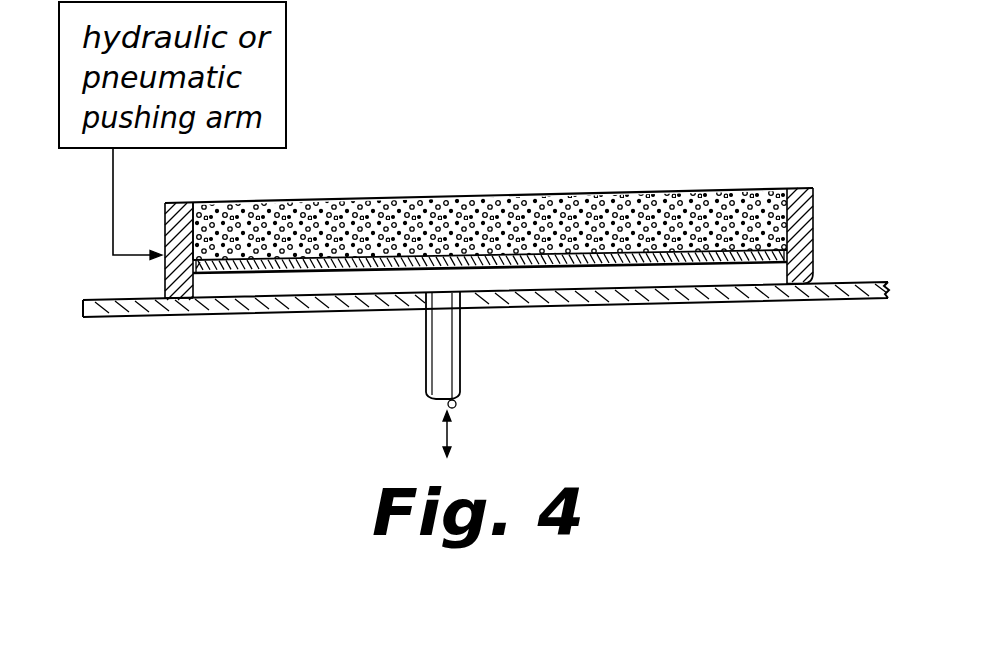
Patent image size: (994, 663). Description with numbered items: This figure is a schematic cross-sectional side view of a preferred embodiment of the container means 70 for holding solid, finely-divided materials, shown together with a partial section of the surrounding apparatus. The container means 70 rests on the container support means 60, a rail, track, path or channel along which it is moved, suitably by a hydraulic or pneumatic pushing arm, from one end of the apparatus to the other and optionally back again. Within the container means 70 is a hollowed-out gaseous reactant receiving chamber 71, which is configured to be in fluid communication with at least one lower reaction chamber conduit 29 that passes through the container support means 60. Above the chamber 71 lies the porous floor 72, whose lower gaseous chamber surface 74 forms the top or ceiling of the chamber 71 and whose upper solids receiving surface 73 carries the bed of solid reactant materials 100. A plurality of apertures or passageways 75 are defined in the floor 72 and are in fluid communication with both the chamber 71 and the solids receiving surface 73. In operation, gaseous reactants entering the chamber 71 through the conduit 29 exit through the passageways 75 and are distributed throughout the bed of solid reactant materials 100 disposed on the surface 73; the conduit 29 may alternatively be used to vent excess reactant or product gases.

The lower reaction chamber conduit 29 is at (452, 367).
The container support means 60 is at (840, 300).
The container means 70 is at (666, 180).
The gaseous reactant receiving chamber 71 is at (280, 286).
The porous floor 72 is at (660, 258).
The solids receiving surface 73 is at (272, 259).
The gaseous chamber surface 74 is at (362, 274).
The passageways 75 is at (222, 276).
The bed of solid reactant materials 100 is at (495, 228).